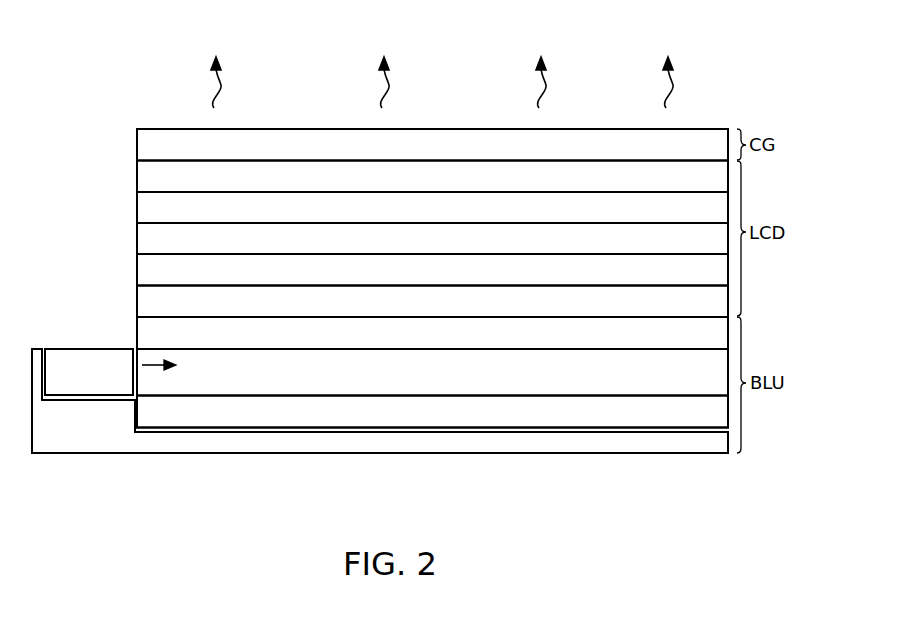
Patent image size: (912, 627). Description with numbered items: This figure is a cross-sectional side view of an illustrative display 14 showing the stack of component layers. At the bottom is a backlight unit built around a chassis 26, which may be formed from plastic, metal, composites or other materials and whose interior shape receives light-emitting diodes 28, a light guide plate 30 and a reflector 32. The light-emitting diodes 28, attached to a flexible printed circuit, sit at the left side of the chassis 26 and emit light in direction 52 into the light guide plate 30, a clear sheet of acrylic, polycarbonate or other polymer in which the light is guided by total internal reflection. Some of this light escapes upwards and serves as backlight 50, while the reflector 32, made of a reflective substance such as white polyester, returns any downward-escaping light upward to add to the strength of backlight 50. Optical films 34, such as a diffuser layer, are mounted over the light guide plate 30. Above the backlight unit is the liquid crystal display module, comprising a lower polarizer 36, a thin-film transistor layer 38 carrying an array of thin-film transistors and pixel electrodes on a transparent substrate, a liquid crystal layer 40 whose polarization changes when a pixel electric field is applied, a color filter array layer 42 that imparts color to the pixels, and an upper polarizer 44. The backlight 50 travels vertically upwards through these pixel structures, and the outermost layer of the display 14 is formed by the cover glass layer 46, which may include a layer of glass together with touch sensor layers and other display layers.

The display 14 is at (725, 52).
The chassis 26 is at (73, 428).
The light-emitting diodes 28 is at (58, 349).
The light guide plate 30 is at (513, 374).
The reflector 32 is at (585, 404).
The optical films 34 is at (147, 332).
The lower polarizer 36 is at (147, 300).
The thin-film transistor layer 38 is at (147, 271).
The liquid crystal layer 40 is at (147, 239).
The color filter array layer 42 is at (147, 208).
The upper polarizer 44 is at (147, 176).
The cover glass 46 is at (147, 146).
The backlight 50 is at (543, 87).
The direction 52 is at (143, 366).